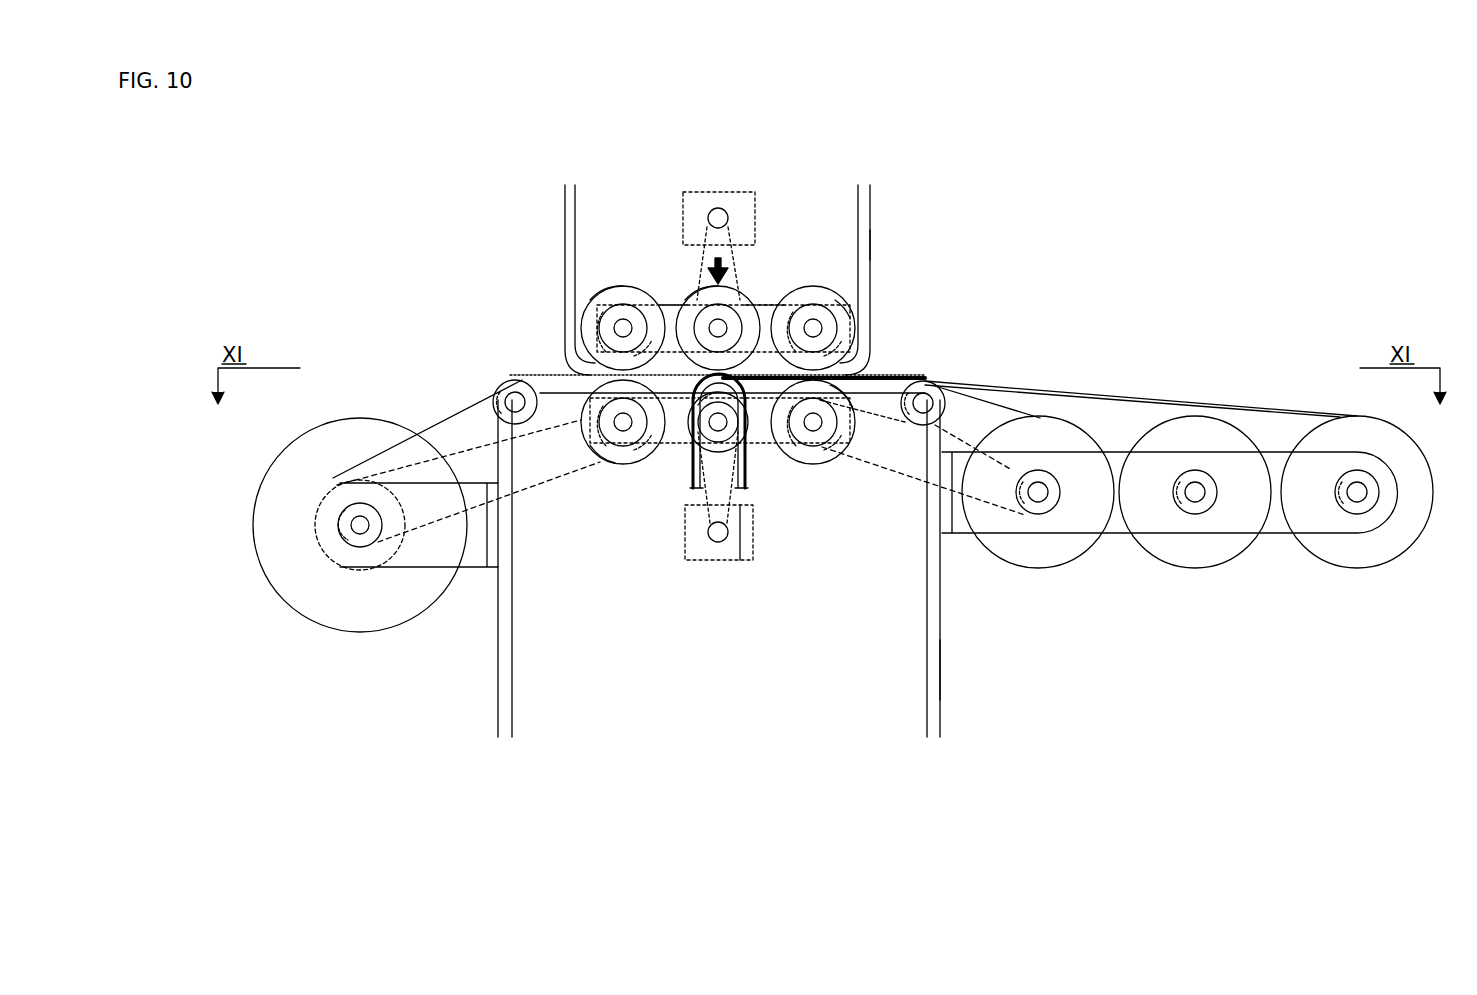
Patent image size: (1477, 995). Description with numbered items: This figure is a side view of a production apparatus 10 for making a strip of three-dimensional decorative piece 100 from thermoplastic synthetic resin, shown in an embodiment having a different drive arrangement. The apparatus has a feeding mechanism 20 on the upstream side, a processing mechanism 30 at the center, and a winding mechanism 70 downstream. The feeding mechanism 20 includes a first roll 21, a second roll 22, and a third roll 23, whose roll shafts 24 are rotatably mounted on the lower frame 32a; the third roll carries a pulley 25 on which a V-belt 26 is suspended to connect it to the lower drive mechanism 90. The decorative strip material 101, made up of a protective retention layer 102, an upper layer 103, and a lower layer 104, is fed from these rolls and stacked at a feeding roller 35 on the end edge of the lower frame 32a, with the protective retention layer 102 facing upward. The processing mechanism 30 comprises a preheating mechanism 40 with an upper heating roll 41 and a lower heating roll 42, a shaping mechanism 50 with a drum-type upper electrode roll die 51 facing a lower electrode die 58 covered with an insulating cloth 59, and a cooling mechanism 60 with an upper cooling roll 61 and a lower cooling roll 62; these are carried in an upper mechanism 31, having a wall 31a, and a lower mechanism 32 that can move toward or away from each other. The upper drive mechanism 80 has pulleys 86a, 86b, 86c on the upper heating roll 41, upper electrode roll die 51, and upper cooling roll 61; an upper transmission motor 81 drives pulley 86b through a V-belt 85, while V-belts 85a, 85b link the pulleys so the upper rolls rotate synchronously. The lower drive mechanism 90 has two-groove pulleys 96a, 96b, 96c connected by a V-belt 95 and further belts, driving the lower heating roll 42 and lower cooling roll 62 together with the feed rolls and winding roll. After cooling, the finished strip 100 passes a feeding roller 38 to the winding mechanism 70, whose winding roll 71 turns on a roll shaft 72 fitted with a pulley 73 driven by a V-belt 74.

The production apparatus 10 is at (1026, 185).
The feeding mechanism 20 is at (1187, 448).
The first roll 21 is at (1352, 555).
The second roll 22 is at (1198, 555).
The third roll 23 is at (1052, 555).
The roll shaft 24 is at (1035, 500).
The pulley 25 is at (1060, 498).
The V-belt 26 is at (968, 495).
The processing mechanism 30 is at (739, 218).
The upper mechanism 31 is at (818, 193).
The housing wall 31a is at (870, 243).
The lower mechanism 32 is at (906, 693).
The lower frame 32a is at (935, 650).
The feeding roller 35 is at (935, 395).
The feeding roller 38 is at (515, 380).
The preheating mechanism 40 is at (858, 448).
The upper heating roll 41 is at (850, 330).
The lower heating roll 42 is at (820, 460).
The shaping mechanism 50 is at (726, 491).
The upper electrode roll die 51 is at (742, 303).
The lower electrode die 58 is at (733, 518).
The insulating cloth 59 is at (748, 443).
The cooling mechanism 60 is at (719, 488).
The upper cooling roll 61 is at (600, 318).
The lower cooling roll 62 is at (625, 465).
The winding mechanism 70 is at (375, 446).
The winding roll 71 is at (383, 480).
The roll shaft 72 is at (360, 536).
The pulley 73 is at (340, 530).
The V-belt 74 is at (415, 530).
The upper drive mechanism 80 is at (706, 179).
The upper transmission motor 81 is at (736, 179).
The V-belt 85 is at (746, 250).
The V-belt 85a is at (767, 303).
The V-belt 85b is at (670, 303).
The pulley 86a is at (835, 300).
The pulley 86b is at (693, 320).
The pulley 86c is at (605, 300).
The lower drive mechanism 90 is at (737, 535).
The V-belt 95 is at (745, 560).
The pulley 96a is at (830, 450).
The pulley 96b is at (757, 448).
The pulley 96c is at (605, 455).
The strip of three-dimensional decorative piece 100 is at (679, 426).
The decorative strip material 101 is at (903, 377).
The protective retention layer 102 is at (1137, 395).
The upper layer 103 is at (1087, 398).
The lower layer 104 is at (1010, 408).